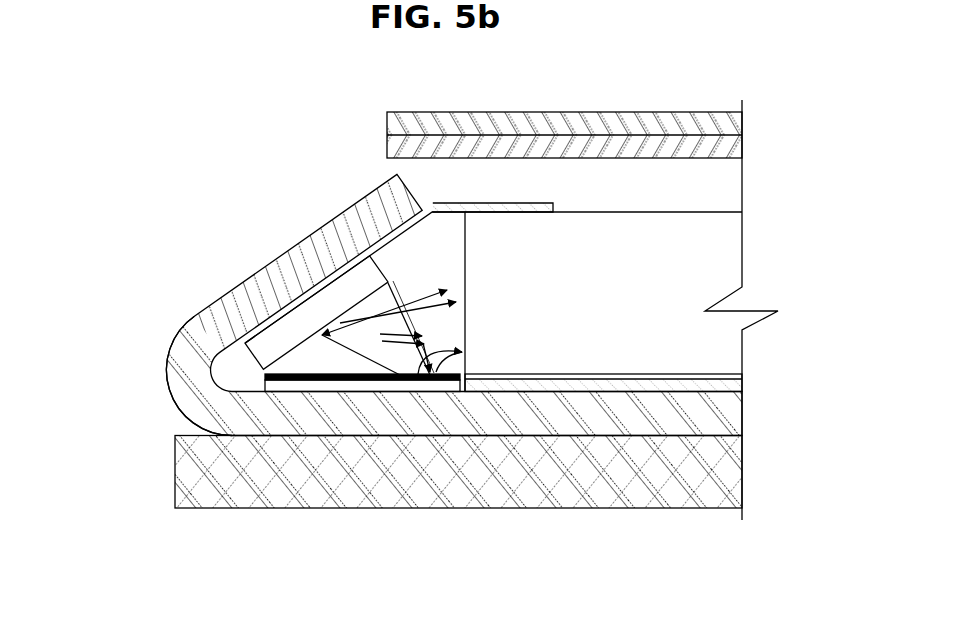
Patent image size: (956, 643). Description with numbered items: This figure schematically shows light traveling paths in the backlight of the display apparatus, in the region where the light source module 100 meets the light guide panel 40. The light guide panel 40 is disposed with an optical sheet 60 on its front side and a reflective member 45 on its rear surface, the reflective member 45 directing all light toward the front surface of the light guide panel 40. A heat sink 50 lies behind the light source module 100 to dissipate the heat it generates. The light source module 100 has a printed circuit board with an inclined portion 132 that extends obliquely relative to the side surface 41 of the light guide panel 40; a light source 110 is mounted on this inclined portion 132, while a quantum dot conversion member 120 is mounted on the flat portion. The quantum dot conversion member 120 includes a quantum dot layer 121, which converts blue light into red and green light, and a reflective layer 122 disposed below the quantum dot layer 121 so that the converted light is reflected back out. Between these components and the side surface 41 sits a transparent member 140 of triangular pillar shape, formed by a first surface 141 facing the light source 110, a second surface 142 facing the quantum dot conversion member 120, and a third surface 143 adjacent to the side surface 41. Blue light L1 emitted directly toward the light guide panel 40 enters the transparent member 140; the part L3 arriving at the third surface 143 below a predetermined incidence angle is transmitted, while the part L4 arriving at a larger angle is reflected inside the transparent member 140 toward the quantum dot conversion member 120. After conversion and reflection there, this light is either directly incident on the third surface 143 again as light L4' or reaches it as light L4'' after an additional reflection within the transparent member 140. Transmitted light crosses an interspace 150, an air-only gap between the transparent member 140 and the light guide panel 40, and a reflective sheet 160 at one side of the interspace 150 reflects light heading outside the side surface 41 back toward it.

The light source module 100 is at (405, 340).
The light source 110 is at (282, 252).
The quantum dot conversion member 120 is at (405, 475).
The quantum dot layer 121 is at (178, 452).
The reflective layer 122 is at (118, 450).
The inclined portion 132 is at (212, 290).
The transparent member 140 is at (362, 443).
The first surface 141 is at (302, 384).
The second surface 142 is at (328, 372).
The third surface 143 is at (420, 378).
The interspace 150 is at (368, 250).
The reflective sheet 160 is at (425, 258).
The light guide panel 40 is at (733, 243).
The side surface 41 is at (466, 232).
The reflective member 45 is at (735, 381).
The heat sink 50 is at (735, 471).
The optical sheet 60 is at (742, 122).
The blue light L1 is at (310, 275).
The transmitted light L3 is at (372, 282).
The reflected light L4 is at (389, 332).
The directly re-incident light L4' is at (468, 359).
The additionally reflected light L4'' is at (379, 384).